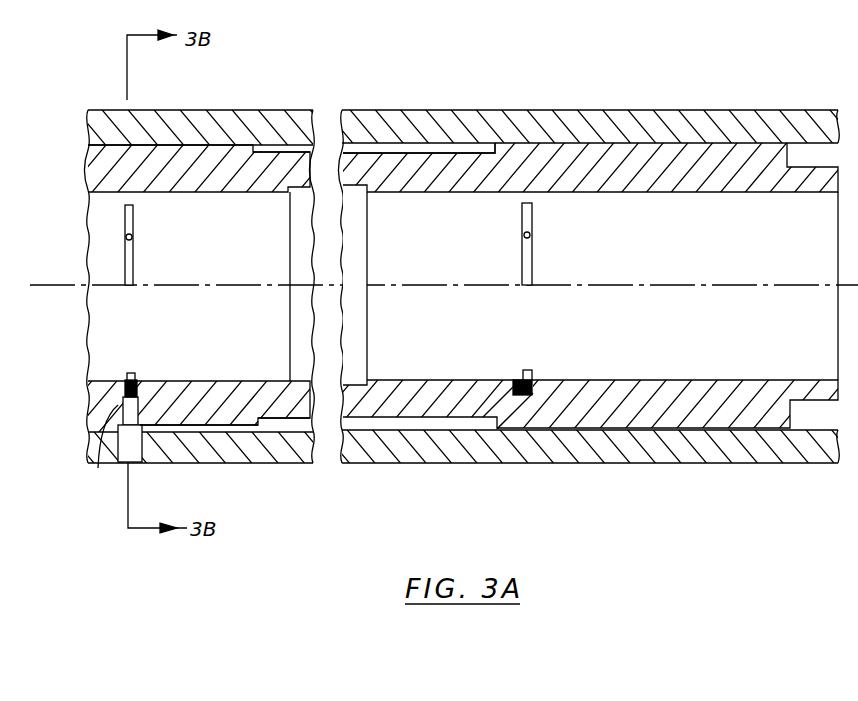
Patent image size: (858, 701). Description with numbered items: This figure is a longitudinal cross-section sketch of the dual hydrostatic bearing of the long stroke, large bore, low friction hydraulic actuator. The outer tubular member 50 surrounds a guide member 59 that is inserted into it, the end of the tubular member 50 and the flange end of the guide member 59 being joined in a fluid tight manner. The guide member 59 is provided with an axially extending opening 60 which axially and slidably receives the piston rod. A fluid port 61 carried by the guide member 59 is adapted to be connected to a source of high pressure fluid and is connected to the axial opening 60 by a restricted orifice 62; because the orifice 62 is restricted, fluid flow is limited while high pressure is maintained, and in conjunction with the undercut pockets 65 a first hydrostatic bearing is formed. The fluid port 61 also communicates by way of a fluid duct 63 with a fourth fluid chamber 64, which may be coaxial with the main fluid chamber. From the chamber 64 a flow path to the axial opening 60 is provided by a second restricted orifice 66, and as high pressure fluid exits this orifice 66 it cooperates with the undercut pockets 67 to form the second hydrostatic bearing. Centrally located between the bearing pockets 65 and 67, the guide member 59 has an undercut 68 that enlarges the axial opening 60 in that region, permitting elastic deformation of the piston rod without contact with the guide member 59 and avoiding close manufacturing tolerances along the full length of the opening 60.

The tubular member 50 is at (677, 123).
The guide member 59 is at (213, 155).
The axially extending opening 60 is at (232, 233).
The fluid port 61 is at (135, 457).
The restricted orifice 62 is at (100, 465).
The fluid duct 63 is at (203, 428).
The fourth fluid chamber 64 is at (453, 150).
The undercut pockets 65 is at (133, 373).
The restricted orifice 66 is at (507, 403).
The undercut pockets 67 is at (518, 370).
The undercut 68 is at (368, 250).